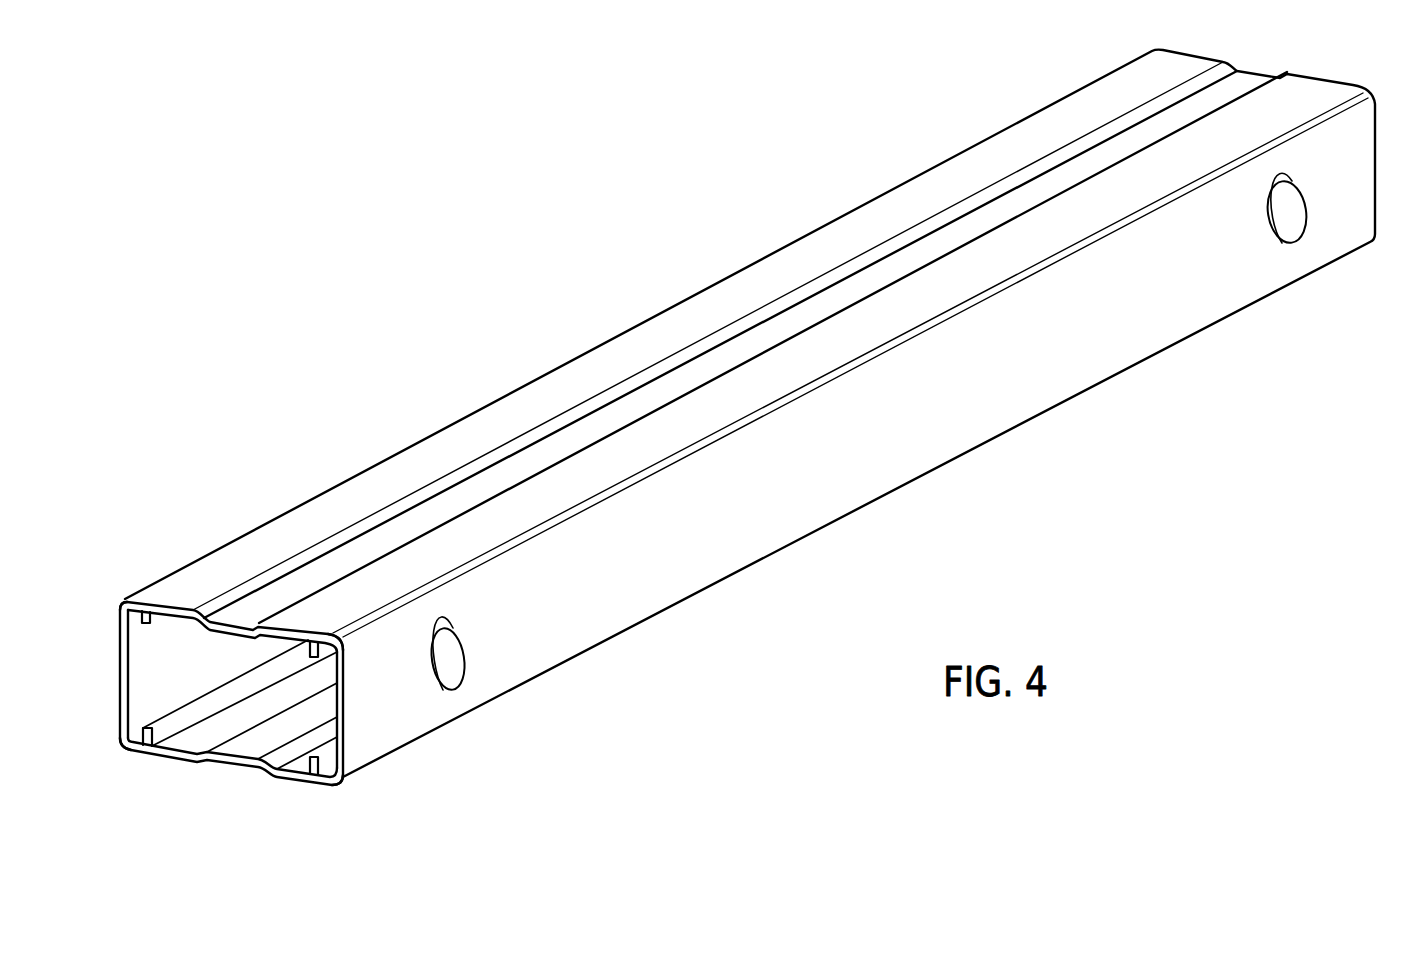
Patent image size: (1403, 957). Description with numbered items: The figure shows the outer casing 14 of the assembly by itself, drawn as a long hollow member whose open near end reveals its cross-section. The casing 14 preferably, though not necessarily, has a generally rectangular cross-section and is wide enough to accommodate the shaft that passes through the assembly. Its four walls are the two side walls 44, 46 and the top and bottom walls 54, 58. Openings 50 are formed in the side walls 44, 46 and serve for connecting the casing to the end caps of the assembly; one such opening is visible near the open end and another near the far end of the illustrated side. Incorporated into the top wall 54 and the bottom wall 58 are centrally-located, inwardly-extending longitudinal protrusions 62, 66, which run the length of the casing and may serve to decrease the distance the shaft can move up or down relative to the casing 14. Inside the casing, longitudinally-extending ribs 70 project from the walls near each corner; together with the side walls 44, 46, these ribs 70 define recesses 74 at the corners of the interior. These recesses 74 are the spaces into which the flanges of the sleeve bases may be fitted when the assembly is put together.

The outer casing 14 is at (616, 250).
The side wall 44 is at (118, 648).
The side wall 46 is at (343, 696).
The openings 50 is at (453, 646).
The top wall 54 is at (388, 470).
The bottom wall 58 is at (297, 778).
The longitudinal protrusion 62 is at (250, 622).
The longitudinal protrusion 66 is at (253, 739).
The longitudinally-extending ribs 70 is at (316, 638).
The recesses 74 is at (119, 600).